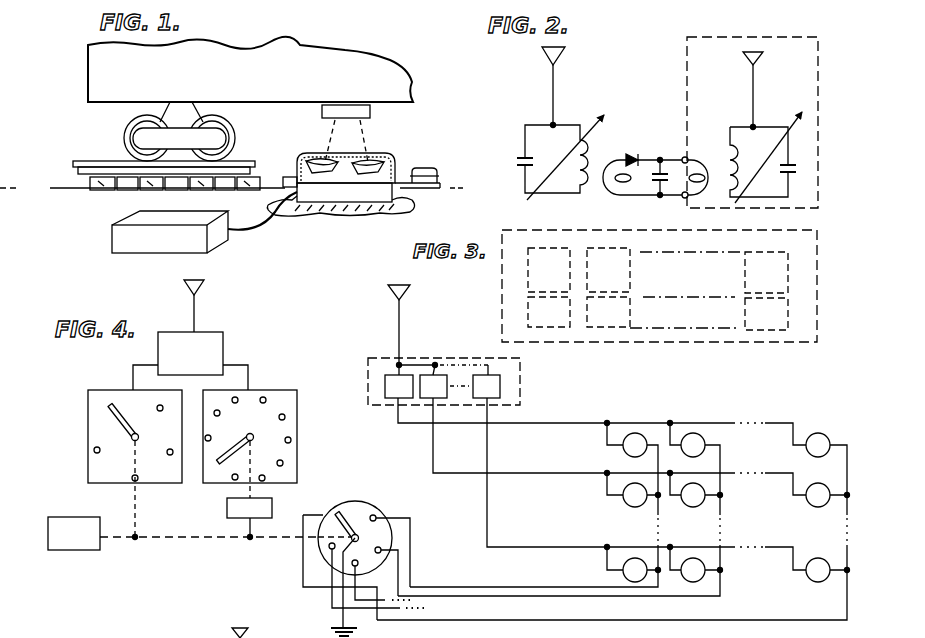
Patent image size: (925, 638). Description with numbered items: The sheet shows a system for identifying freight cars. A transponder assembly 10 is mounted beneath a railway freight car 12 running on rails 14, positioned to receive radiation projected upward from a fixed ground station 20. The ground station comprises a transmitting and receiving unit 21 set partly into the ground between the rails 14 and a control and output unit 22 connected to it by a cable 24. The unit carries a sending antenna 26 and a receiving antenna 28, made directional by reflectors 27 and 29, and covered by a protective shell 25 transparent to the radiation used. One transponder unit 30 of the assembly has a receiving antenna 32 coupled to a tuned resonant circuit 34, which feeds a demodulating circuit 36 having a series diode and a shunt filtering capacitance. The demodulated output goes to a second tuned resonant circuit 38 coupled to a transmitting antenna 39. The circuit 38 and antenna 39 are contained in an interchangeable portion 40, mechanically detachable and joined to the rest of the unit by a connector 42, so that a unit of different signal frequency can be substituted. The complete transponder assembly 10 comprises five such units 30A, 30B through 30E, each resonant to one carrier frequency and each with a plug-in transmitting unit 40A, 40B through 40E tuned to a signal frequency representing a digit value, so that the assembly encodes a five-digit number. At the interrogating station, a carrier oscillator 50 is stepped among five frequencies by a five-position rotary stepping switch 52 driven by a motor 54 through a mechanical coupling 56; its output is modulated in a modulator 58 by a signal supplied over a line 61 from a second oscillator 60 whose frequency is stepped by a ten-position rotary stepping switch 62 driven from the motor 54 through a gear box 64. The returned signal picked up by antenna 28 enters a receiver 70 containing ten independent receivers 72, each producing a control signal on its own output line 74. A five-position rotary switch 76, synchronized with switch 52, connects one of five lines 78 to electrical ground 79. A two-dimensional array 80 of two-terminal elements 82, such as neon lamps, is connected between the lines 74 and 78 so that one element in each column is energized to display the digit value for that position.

In FIG. 1, the transponder assembly 10 is at (375, 113).
In FIG. 3, the transponder assembly 10 is at (664, 293).
In FIG. 1, the railway freight car 12 is at (86, 86).
In FIG. 1, the rails 14 is at (103, 160).
In FIG. 1, the ground station 20 is at (339, 187).
In FIG. 1, the transmitting and receiving unit 21 is at (330, 198).
In FIG. 1, the control and output unit 22 is at (112, 236).
In FIG. 1, the cable 24 is at (250, 230).
In FIG. 1, the protective shell 25 is at (392, 208).
In FIG. 1, the sending antenna 26 is at (322, 160).
In FIG. 4, the sending antenna 26 is at (186, 288).
In FIG. 1, the reflector 27 is at (297, 175).
In FIG. 1, the receiving antenna 28 is at (372, 160).
In FIG. 4, the receiving antenna 28 is at (404, 300).
In FIG. 1, the reflector 29 is at (400, 170).
In FIG. 2, the transponder unit 30 is at (562, 160).
In FIG. 2, the receiving antenna 32 is at (565, 57).
In FIG. 2, the tuned resonant circuit 34 is at (613, 138).
In FIG. 2, the demodulating circuit 36 is at (670, 150).
In FIG. 2, the second tuned resonant circuit 38 is at (802, 158).
In FIG. 2, the transmitting antenna 39 is at (765, 58).
In FIG. 2, the interchangeable portion 40 is at (693, 114).
In FIG. 2, the connector 42 is at (690, 200).
In FIG. 3, the transponder unit A 30A is at (525, 274).
In FIG. 3, the transponder unit B 30B is at (633, 270).
In FIG. 3, the transponder unit E 30E is at (792, 272).
In FIG. 3, the transmitting unit A 40A is at (556, 328).
In FIG. 3, the transmitting unit B 40B is at (616, 328).
In FIG. 3, the transmitting unit E 40E is at (790, 319).
In FIG. 4, the carrier oscillator 50 is at (111, 423).
In FIG. 4, the five-position rotary stepping switch 52 is at (99, 455).
In FIG. 4, the motor 54 is at (75, 550).
In FIG. 4, the mechanical coupling 56 is at (135, 498).
In FIG. 4, the modulator 58 is at (223, 332).
In FIG. 4, the second oscillator 60 is at (266, 442).
In FIG. 4, the line 61 is at (248, 362).
In FIG. 4, the ten-position rotary stepping switch 62 is at (282, 476).
In FIG. 4, the gear box 64 is at (227, 507).
In FIG. 4, the receiver 70 is at (444, 370).
In FIG. 4, the receivers 72 is at (408, 378).
In FIG. 4, the output lines 74 is at (555, 470).
In FIG. 4, the five-position rotary switch 76 is at (382, 503).
In FIG. 4, the lines 78 is at (548, 622).
In FIG. 4, the electrical ground 79 is at (340, 617).
In FIG. 4, the two-dimensional array 80 is at (613, 501).
In FIG. 4, the two-terminal elements 82 is at (645, 433).